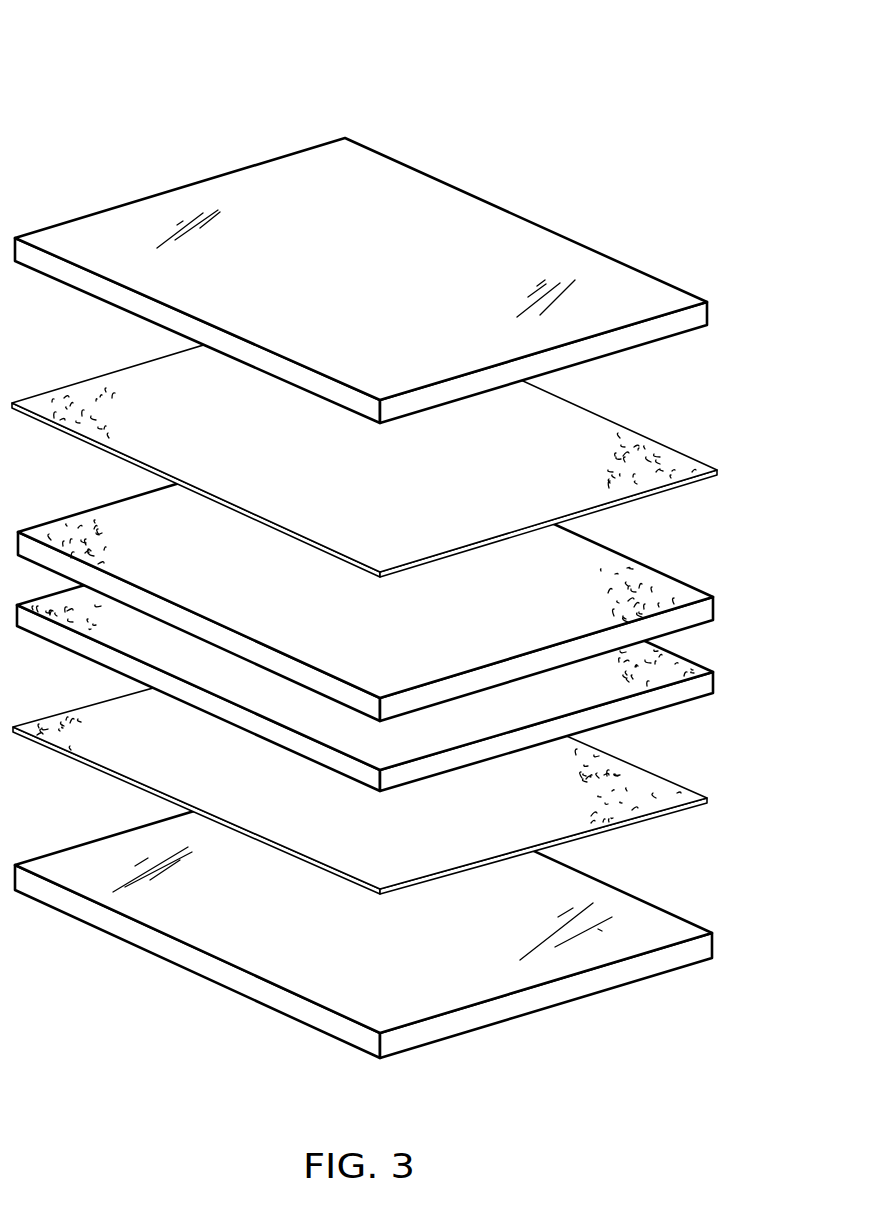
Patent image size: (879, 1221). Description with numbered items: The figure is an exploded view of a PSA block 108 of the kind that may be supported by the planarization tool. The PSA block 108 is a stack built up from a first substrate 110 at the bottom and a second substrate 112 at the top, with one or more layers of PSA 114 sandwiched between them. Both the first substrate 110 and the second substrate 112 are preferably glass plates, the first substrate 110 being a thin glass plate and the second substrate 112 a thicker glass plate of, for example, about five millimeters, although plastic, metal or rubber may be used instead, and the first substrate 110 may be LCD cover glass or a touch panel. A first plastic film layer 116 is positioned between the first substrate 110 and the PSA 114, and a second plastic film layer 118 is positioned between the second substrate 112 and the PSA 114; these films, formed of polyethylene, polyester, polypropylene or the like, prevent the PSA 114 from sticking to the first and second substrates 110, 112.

The PSA block 108 is at (382, 547).
The first substrate 110 is at (522, 1003).
The second substrate 112 is at (450, 190).
The PSA layer 114 is at (667, 667).
The first plastic film layer 116 is at (650, 783).
The second plastic film layer 118 is at (587, 422).